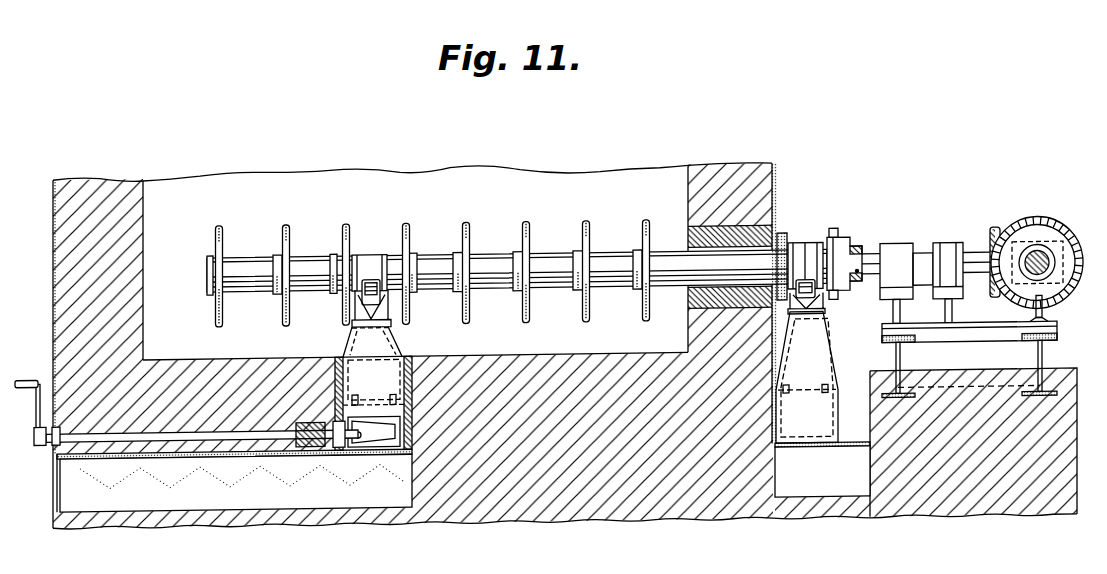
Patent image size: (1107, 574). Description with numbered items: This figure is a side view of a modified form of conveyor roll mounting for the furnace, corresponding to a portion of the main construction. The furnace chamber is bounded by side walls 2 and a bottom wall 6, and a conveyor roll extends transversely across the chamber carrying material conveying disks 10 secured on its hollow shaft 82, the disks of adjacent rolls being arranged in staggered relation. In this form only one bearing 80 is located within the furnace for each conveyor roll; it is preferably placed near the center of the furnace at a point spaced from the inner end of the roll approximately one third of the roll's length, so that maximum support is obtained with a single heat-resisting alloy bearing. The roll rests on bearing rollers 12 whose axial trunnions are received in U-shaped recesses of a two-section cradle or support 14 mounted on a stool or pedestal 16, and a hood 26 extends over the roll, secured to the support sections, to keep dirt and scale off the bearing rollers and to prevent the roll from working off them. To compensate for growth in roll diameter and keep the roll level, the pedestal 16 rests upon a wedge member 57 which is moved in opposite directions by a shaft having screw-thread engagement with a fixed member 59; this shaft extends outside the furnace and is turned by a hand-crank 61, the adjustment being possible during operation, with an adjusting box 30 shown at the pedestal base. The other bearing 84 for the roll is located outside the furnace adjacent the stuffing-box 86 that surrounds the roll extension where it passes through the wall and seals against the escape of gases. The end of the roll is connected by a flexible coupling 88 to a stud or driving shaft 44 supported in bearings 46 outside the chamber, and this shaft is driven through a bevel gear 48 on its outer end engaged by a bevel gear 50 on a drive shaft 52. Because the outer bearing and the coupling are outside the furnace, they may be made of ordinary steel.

The side wall 2 is at (104, 192).
The bottom wall 6 is at (566, 366).
The material conveying disk 10 is at (283, 233).
The bearing roller 12 is at (370, 297).
The cradle or support 14 is at (390, 318).
The stool or pedestal 16 is at (378, 352).
The hood 26 is at (358, 259).
The adjusting box 30 is at (374, 415).
The driving shaft 44 is at (925, 263).
The bearing 46 is at (953, 256).
The bevel gear 48 is at (1000, 241).
The bevel gear 50 is at (1047, 235).
The drive shaft 52 is at (1033, 271).
The wedge member 57 is at (372, 445).
The fixed member 59 is at (312, 451).
The hand-crank 61 is at (35, 410).
The bearing 80 is at (376, 250).
The shaft 82 is at (557, 266).
The bearing 84 is at (806, 242).
The stuffing-box 86 is at (782, 251).
The flexible coupling 88 is at (853, 254).